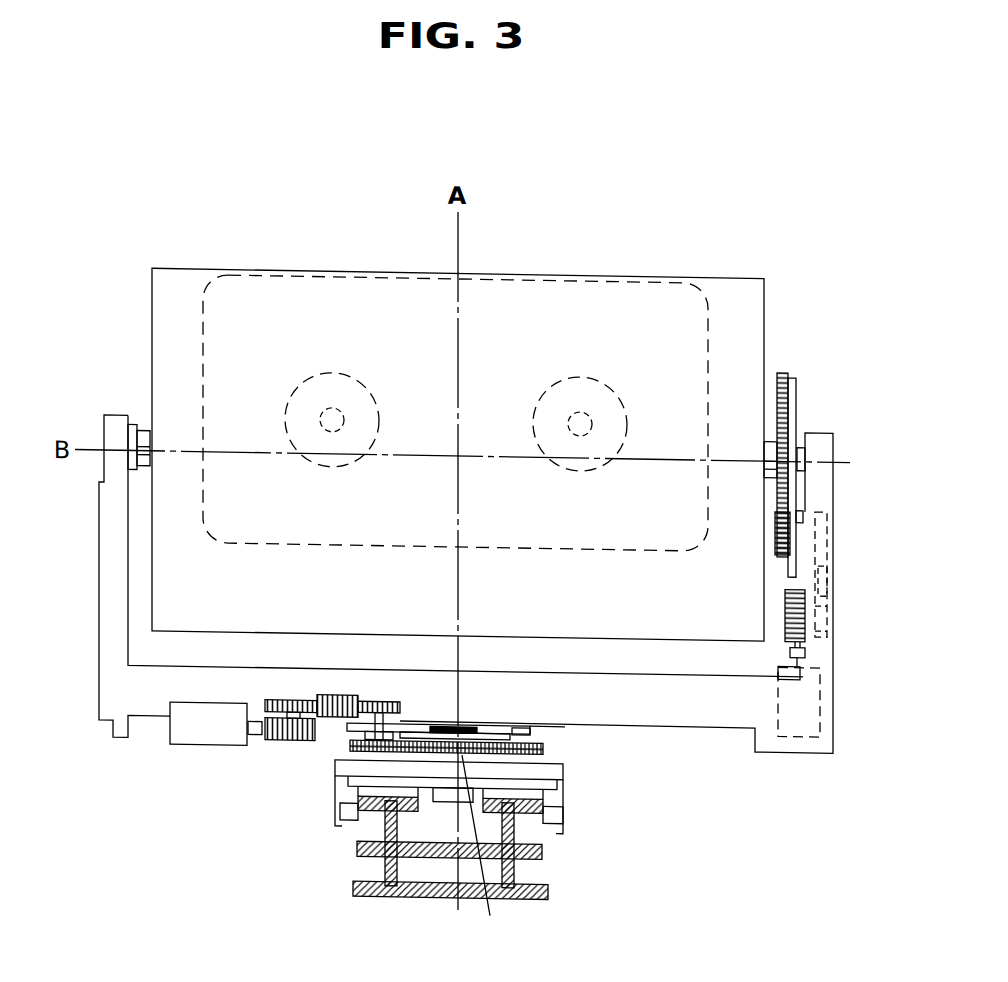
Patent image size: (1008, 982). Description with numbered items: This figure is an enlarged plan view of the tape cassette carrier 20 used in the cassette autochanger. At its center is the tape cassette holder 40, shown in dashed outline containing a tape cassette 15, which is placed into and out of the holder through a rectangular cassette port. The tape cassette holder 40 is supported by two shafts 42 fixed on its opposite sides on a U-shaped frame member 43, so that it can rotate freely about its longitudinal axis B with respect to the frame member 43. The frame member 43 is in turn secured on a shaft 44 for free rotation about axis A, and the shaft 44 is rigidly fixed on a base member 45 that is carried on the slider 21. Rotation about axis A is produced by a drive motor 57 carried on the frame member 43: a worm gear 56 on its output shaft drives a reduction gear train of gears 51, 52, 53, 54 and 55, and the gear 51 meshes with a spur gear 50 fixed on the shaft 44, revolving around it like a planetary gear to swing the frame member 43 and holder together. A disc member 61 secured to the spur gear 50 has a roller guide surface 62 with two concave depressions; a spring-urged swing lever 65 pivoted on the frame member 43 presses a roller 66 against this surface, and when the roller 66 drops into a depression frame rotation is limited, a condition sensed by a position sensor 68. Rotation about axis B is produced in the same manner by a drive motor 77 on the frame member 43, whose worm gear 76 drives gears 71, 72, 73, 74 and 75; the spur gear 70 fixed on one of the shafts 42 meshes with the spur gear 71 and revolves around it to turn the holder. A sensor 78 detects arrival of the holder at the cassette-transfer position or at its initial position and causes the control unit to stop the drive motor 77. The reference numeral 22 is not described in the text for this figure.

The tape cassette carrier 20 is at (667, 226).
The tape cassette holder 40 is at (175, 283).
The tape cassette 15 is at (200, 374).
The shafts 42 is at (143, 437).
The frame member 43 is at (100, 618).
The drive motor 57 is at (190, 745).
The worm gear 56 is at (268, 748).
The gear 54 is at (285, 703).
The gear 55 is at (295, 744).
The gear 53 is at (322, 700).
The gear 52 is at (378, 703).
The roller 66 is at (416, 738).
The swing lever 65 is at (340, 754).
The roller guide surface 62 is at (468, 745).
The disc member 61 is at (492, 744).
The spur gear 50 is at (505, 744).
The position sensor 68 is at (520, 732).
The base member 45 is at (337, 772).
The gear 51 is at (337, 792).
The slider 21 is at (512, 805).
The support plate 22 is at (520, 850).
The shaft 44 is at (488, 850).
The spur gear 70 is at (779, 369).
The sensor 78 is at (775, 543).
The gear 75 is at (782, 555).
The worm gear 76 is at (790, 626).
The gear 74 is at (827, 509).
The gear 73 is at (830, 569).
The spur gear 71 is at (825, 614).
The gear 72 is at (820, 634).
The drive motor 77 is at (812, 704).